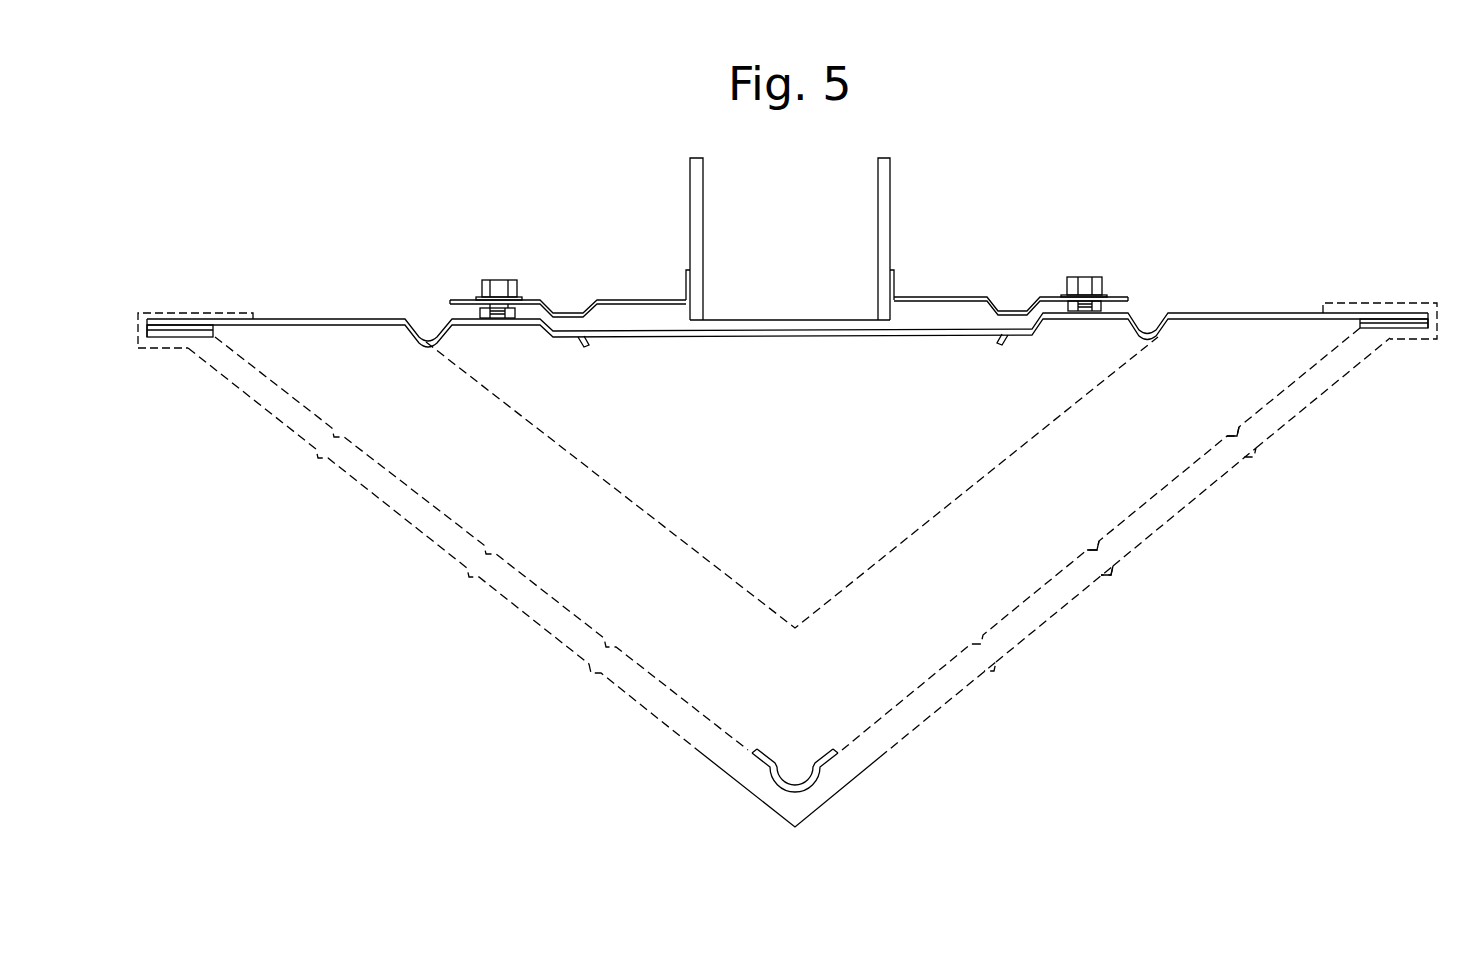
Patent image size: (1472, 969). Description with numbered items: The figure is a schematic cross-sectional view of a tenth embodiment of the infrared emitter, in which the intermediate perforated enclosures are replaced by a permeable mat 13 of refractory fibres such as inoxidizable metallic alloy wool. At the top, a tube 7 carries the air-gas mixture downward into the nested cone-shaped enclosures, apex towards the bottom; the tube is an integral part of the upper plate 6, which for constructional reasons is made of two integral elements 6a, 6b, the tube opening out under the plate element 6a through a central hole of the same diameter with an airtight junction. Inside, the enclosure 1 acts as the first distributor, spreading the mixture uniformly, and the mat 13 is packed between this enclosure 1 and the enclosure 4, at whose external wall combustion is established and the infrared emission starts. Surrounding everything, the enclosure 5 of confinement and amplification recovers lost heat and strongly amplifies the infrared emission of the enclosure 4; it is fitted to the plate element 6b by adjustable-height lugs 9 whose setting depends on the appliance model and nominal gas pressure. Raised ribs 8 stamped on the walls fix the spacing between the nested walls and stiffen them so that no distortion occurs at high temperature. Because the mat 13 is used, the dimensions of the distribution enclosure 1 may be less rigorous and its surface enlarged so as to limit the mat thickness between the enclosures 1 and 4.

The enclosure 1 is at (1047, 423).
The enclosure 4 is at (1060, 580).
The enclosure of confinement and amplification 5 is at (1035, 632).
The upper plate 6 is at (787, 241).
The plate element 6a is at (789, 281).
The plate element 6b is at (787, 314).
The tube 7 is at (888, 183).
The raised ribs 8 is at (1112, 576).
The adjustable-height lugs 9 is at (1393, 303).
The permeable mat 13 is at (1040, 497).